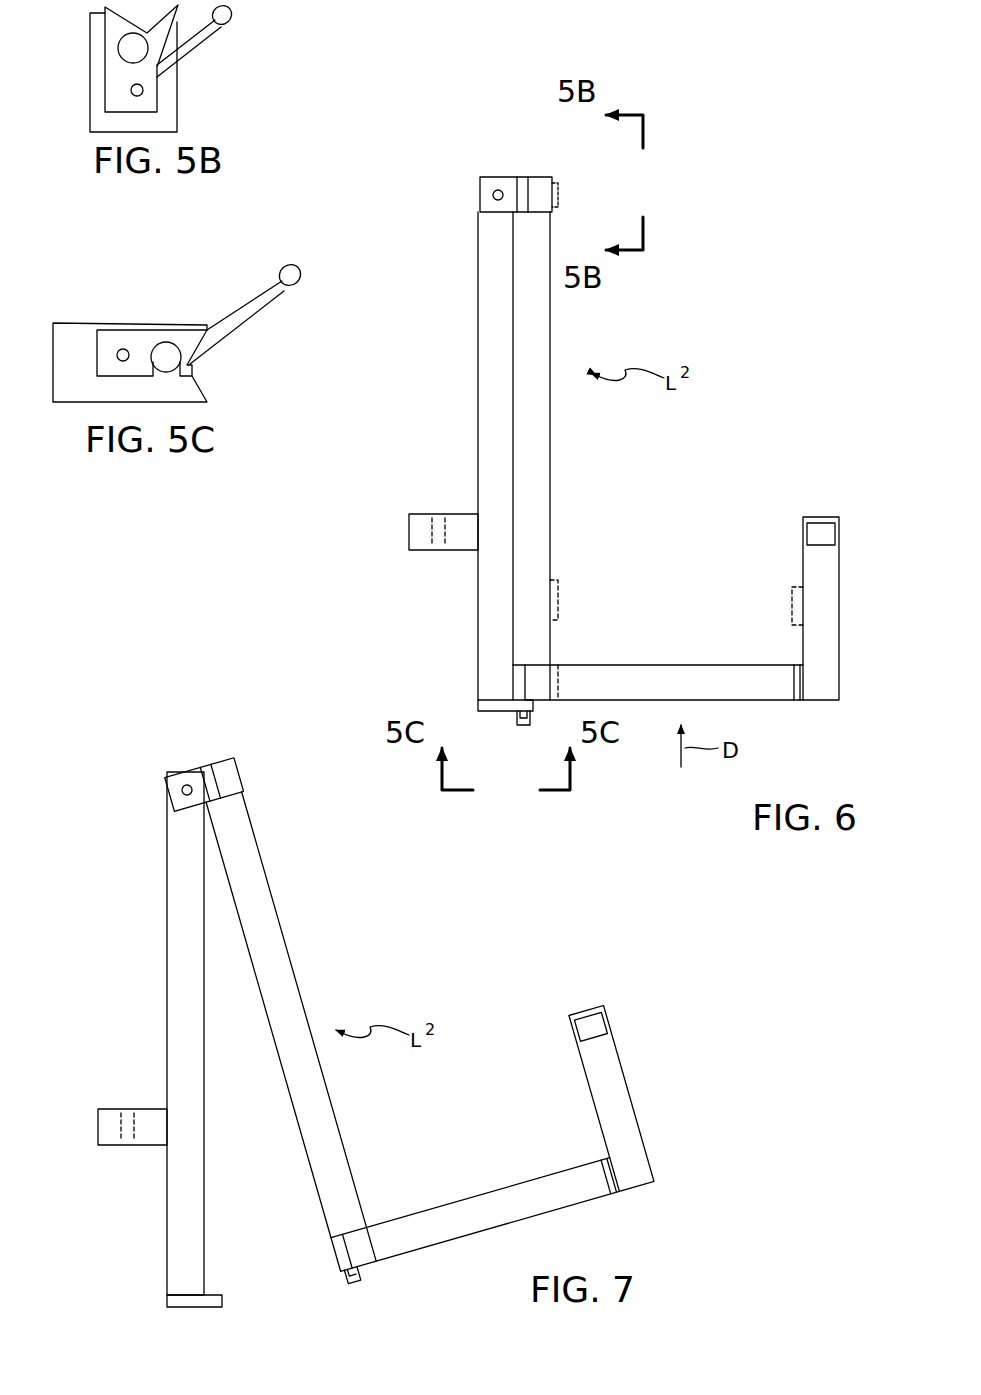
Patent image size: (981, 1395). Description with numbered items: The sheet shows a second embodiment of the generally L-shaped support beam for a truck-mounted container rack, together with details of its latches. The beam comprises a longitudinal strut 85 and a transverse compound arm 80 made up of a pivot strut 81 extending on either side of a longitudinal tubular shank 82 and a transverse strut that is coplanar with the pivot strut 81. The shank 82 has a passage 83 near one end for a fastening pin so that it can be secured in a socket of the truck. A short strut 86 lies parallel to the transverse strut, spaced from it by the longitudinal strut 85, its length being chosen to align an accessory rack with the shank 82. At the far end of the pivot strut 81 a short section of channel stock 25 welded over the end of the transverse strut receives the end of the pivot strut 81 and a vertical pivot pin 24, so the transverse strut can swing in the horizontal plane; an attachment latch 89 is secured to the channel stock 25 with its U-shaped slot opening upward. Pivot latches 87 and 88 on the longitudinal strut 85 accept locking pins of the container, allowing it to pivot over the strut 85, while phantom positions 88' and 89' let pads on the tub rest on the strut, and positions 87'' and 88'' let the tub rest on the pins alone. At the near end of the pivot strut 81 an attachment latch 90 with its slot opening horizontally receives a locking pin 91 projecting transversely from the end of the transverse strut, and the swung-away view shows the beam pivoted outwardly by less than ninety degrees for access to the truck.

In FIG. 6, the pivot pin 24 is at (492, 196).
In FIG. 6, the channel stock 25 is at (490, 177).
In FIG. 6, the transverse compound arm 80 is at (453, 616).
In FIG. 7, the transverse compound arm 80 is at (154, 1027).
In FIG. 6, the pivot strut 81 is at (495, 456).
In FIG. 7, the pivot strut 81 is at (167, 965).
In FIG. 6, the longitudinal tubular shank 82 is at (409, 530).
In FIG. 7, the longitudinal tubular shank 82 is at (151, 1109).
In FIG. 6, the passage 83 is at (440, 518).
In FIG. 7, the passage 83 is at (128, 1130).
In FIG. 6, the longitudinal strut 85 is at (705, 666).
In FIG. 6, the short strut 86 is at (839, 635).
In FIG. 6, the pivot latch 87 is at (812, 709).
In FIG. 6, the pivot latch (alternative position) 87'' is at (759, 596).
In FIG. 6, the pivot latch 88 is at (476, 673).
In FIG. 6, the pivot latch (alternative position) 88' is at (581, 661).
In FIG. 6, the pivot latch (alternative position) 88'' is at (588, 587).
In FIG. 6, the attachment latch 89 is at (522, 162).
In FIG. 6, the attachment latch (alternative position) 89' is at (573, 174).
In FIG. 6, the attachment latch 90 is at (478, 705).
In FIG. 7, the attachment latch 90 is at (182, 1306).
In FIG. 6, the locking pin 91 is at (522, 725).